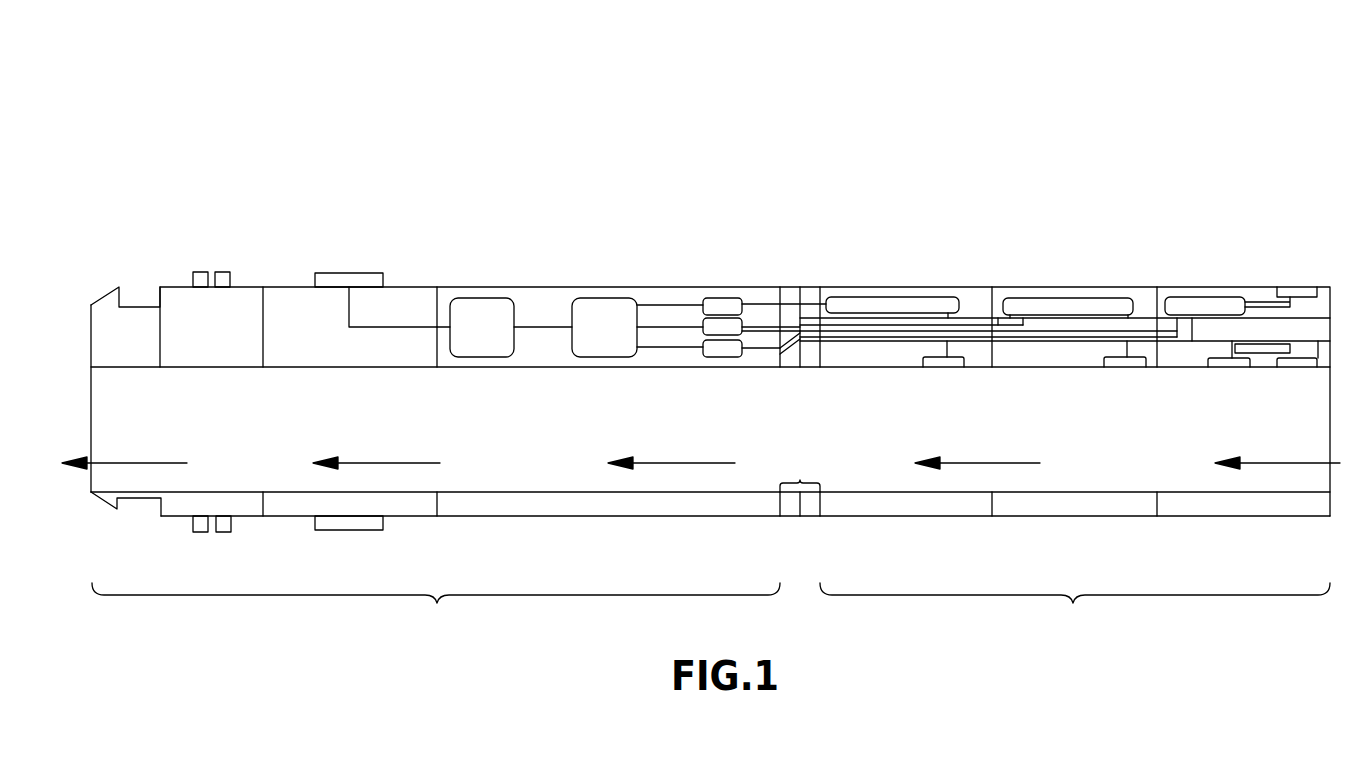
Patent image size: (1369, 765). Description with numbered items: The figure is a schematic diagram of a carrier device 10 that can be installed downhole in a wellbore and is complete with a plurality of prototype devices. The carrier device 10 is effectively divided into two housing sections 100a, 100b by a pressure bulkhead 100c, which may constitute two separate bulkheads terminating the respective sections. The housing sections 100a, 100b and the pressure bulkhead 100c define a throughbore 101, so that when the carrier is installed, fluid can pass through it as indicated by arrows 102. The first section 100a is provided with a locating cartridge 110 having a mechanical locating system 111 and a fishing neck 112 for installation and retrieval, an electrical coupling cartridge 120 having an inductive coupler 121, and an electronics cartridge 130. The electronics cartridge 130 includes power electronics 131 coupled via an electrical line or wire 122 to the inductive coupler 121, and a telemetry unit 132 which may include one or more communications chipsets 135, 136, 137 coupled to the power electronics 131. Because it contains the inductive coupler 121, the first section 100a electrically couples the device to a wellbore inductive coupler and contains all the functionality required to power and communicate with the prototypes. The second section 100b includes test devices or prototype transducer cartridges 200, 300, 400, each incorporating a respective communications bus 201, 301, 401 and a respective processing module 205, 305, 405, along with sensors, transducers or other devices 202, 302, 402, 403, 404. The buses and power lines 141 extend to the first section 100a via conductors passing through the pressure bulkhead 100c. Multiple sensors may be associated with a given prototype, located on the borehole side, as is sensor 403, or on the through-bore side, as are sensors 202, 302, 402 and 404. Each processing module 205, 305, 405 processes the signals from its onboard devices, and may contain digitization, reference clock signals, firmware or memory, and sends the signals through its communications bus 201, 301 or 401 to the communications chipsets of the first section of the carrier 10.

The carrier device 10 is at (917, 103).
The first section 100a is at (436, 609).
The second section 100b is at (1075, 609).
The pressure bulkhead 100c is at (802, 480).
The throughbore 101 is at (227, 405).
The arrows 102 is at (386, 463).
The locating cartridge 110 is at (243, 508).
The mechanical locating system 111 is at (201, 270).
The fishing neck 112 is at (109, 508).
The electrical coupling cartridge 120 is at (392, 508).
The inductive coupler 121 is at (337, 279).
The electrical line 122 is at (393, 327).
The electronics cartridge 130 is at (538, 508).
The power electronics 131 is at (483, 308).
The telemetry unit 132 is at (602, 308).
The communications chipset 135 is at (716, 308).
The communications chipset 136 is at (737, 325).
The communications chipset 137 is at (723, 353).
The power lines 141 is at (790, 345).
The prototype transducer cartridge 200 is at (882, 297).
The communications bus 201 is at (808, 305).
The sensor 202 is at (945, 366).
The processing module 205 is at (937, 305).
The prototype transducer cartridge 300 is at (1062, 300).
The communications bus 301 is at (1000, 322).
The sensor 302 is at (1125, 366).
The processing module 305 is at (1104, 303).
The prototype transducer cartridge 400 is at (1250, 292).
The communications bus 401 is at (1163, 330).
The sensor 402 is at (1232, 364).
The sensor 403 is at (1283, 294).
The sensor 404 is at (1304, 364).
The processing module 405 is at (1208, 303).